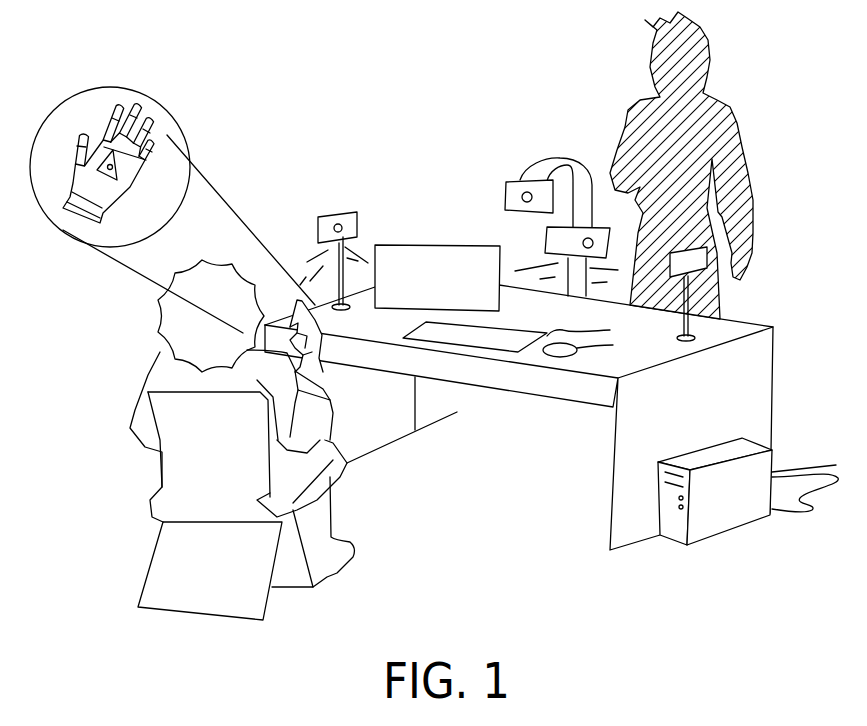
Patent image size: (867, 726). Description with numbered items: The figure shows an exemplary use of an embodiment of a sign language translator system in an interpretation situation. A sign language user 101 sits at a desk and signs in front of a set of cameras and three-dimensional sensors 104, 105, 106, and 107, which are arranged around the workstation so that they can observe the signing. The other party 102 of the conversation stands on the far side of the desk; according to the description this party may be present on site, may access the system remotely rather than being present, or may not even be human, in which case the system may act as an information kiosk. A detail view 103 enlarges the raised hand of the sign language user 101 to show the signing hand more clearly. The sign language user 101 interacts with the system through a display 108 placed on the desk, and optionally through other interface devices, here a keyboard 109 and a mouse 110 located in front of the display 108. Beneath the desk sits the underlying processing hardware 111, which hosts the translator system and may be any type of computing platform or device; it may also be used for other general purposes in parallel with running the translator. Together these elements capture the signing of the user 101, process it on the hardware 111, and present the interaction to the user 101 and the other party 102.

The sign language user 101 is at (310, 445).
The other party 102 is at (627, 120).
The glove with sensor (detail view) 103 is at (167, 136).
The camera and 3D sensor 104 is at (547, 237).
The camera and 3D sensor 105 is at (513, 181).
The camera and 3D sensor 106 is at (340, 212).
The camera and 3D sensor 107 is at (736, 265).
The display 108 is at (408, 244).
The keyboard 109 is at (462, 348).
The mouse 110 is at (562, 358).
The processing hardware 111 is at (660, 515).